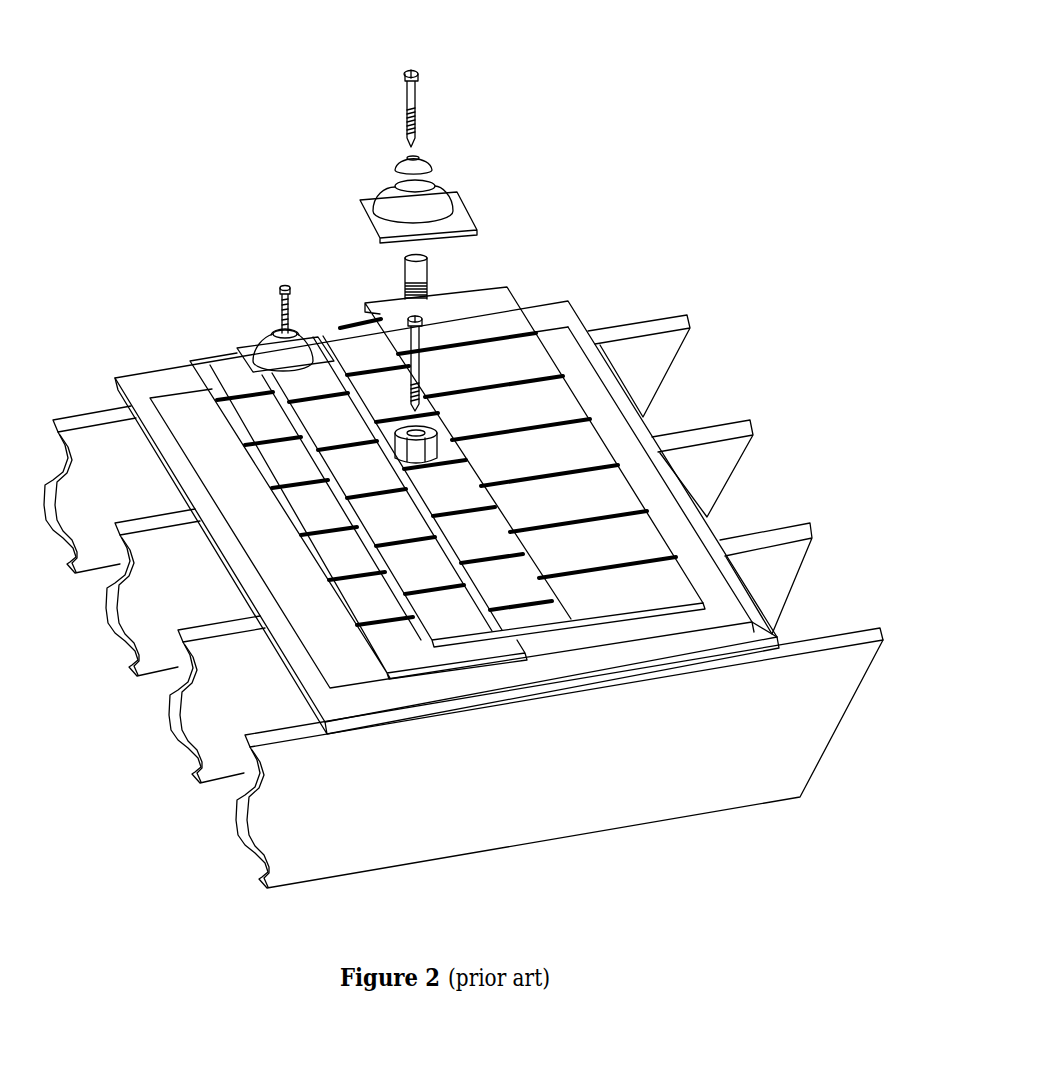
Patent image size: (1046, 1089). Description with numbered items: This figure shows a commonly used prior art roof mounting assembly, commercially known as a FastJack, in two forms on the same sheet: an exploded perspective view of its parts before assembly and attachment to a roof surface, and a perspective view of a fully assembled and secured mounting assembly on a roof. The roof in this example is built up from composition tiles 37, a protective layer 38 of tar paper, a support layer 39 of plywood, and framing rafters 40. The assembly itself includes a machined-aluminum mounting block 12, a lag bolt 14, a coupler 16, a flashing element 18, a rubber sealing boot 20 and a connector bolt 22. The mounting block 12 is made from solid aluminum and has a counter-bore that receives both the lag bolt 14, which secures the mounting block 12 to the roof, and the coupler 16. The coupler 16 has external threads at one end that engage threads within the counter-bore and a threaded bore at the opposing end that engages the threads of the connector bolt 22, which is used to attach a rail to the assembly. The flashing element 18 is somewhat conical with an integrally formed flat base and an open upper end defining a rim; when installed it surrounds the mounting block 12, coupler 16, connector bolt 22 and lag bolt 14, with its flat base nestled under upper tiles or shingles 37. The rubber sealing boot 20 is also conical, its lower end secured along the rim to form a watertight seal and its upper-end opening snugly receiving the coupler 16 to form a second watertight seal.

The mounting block 12 is at (440, 444).
The lag bolt 14 is at (423, 330).
The coupler 16 is at (430, 267).
The flashing element 18 is at (455, 203).
The rubber sealing boot 20 is at (432, 160).
The connector bolt 22 is at (420, 100).
The composition tiles 37 is at (447, 483).
The protective layer 38 is at (672, 482).
The support layer 39 is at (447, 517).
The framing rafters 40 is at (725, 703).